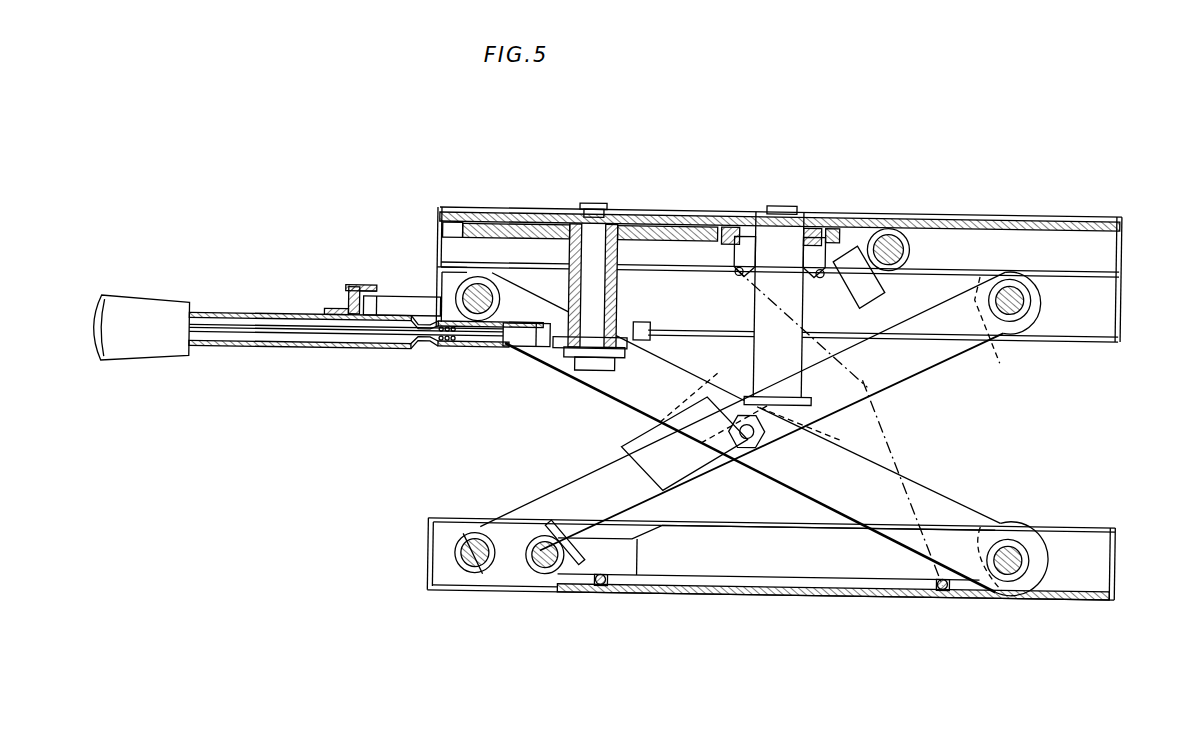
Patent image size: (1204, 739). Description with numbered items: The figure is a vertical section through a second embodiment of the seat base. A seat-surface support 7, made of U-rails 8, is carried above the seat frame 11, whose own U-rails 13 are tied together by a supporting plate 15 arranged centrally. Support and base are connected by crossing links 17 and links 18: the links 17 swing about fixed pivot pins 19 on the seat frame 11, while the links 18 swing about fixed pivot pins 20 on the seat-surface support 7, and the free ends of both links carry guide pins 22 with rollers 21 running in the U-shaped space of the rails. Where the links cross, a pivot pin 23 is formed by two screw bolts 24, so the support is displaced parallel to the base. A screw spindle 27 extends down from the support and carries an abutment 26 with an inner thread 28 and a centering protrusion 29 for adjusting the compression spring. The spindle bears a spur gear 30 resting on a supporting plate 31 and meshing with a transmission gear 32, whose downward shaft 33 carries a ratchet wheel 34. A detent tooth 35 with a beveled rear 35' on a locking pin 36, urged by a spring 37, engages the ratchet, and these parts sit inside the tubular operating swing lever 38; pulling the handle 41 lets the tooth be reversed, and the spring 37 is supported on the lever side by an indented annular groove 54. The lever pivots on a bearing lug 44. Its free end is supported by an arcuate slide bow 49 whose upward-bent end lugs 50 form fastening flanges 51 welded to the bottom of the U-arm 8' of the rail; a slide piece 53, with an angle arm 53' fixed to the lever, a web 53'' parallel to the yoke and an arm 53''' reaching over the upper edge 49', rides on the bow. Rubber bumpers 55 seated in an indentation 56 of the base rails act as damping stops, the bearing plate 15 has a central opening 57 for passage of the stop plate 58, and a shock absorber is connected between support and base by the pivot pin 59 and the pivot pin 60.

The seat-surface support 7 is at (1124, 287).
The U-rails 8 is at (818, 302).
The U-arm of the U-rail 8' is at (484, 229).
The seat frame 11 is at (1122, 543).
The U-rails 13 is at (1100, 562).
The supporting plate 15 is at (849, 586).
The links 17 is at (518, 556).
The links 18 is at (900, 505).
The pivot pins 19 is at (475, 573).
The pivot pins 20 is at (479, 307).
The rollers 21 is at (985, 315).
The guide pins 22 is at (1015, 305).
The pivot pin 23 is at (750, 429).
The screw bolts 24 is at (754, 452).
The abutment 26 is at (817, 234).
The screw spindle 27 is at (778, 235).
The inner thread 28 is at (736, 266).
The centering protrusion 29 is at (811, 265).
The gear 30 is at (742, 236).
The supporting plate 31 is at (993, 215).
The transmission gear 32 is at (692, 226).
The shaft 33 is at (596, 238).
The ratchet wheel 34 is at (587, 370).
The detent tooth 35 is at (525, 369).
The rear of the locking tooth 35' is at (549, 368).
The locking pin 36 is at (399, 331).
The spring 37 is at (450, 353).
The operating swing lever 38 is at (282, 349).
The handle 41 is at (161, 302).
The bearing lug 44 is at (622, 347).
The slide bow 49 is at (402, 263).
The upper edge of the yoke 49' is at (365, 253).
The end lugs 50 is at (438, 268).
The fastening flanges 51 is at (451, 262).
The slide piece 53 is at (304, 272).
The angle arm 53' is at (333, 361).
The web 53'' is at (330, 261).
The arm 53''' is at (355, 260).
The indented annular groove 54 is at (425, 347).
The rubber bumpers 55 is at (650, 522).
The indentation 56 is at (642, 537).
The central opening 57 is at (789, 590).
The stop plate 58 is at (813, 397).
The pivot pin 59 is at (548, 568).
The pivot pin 60 is at (892, 233).